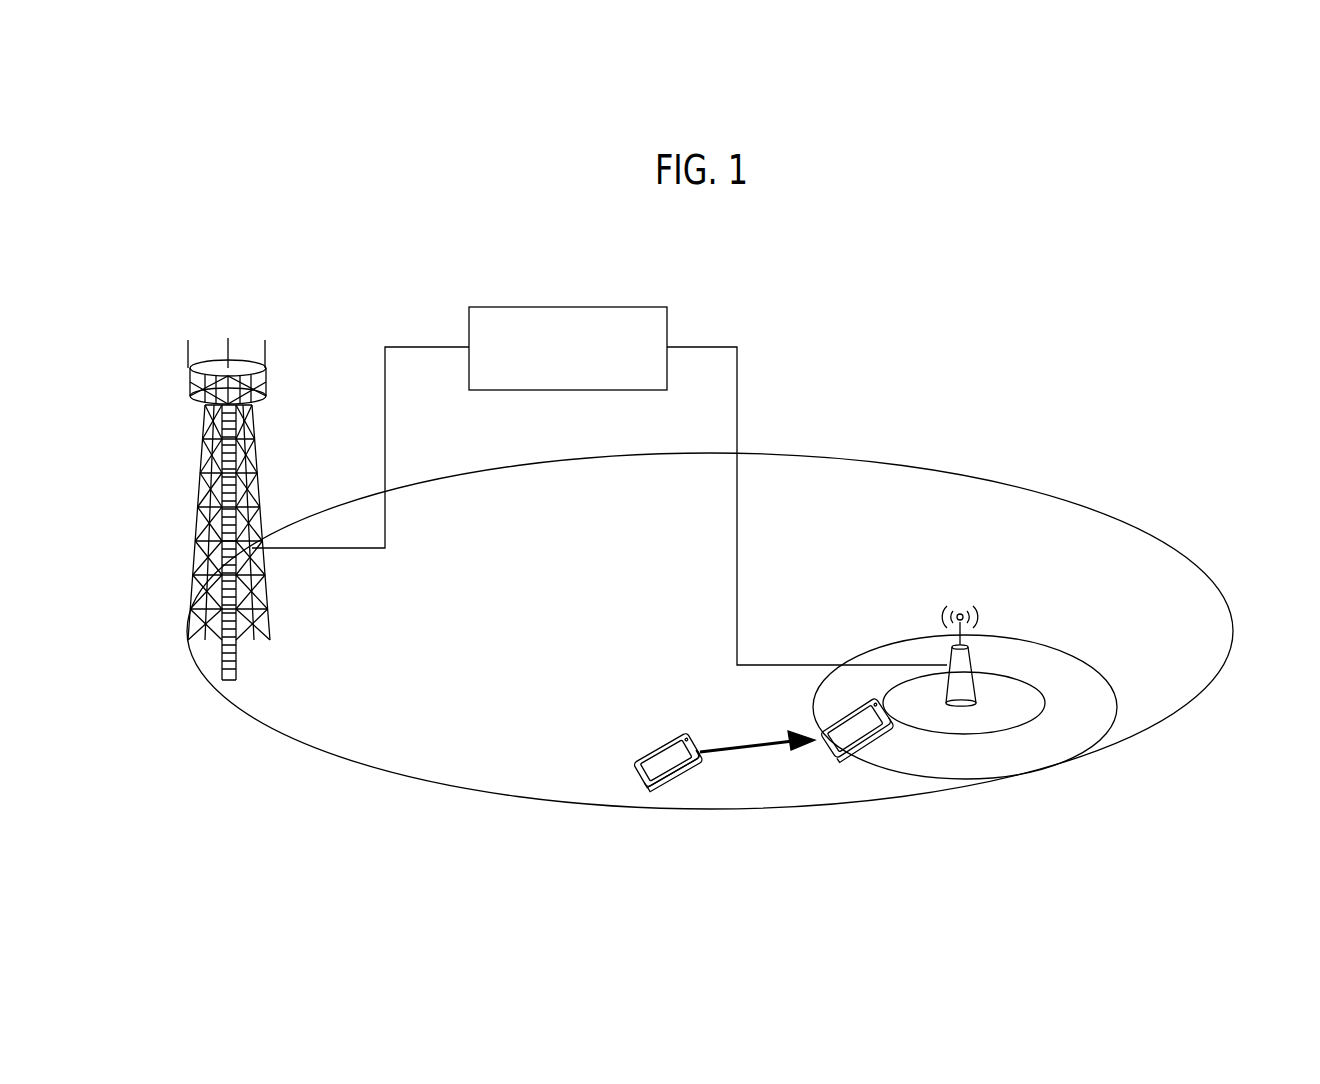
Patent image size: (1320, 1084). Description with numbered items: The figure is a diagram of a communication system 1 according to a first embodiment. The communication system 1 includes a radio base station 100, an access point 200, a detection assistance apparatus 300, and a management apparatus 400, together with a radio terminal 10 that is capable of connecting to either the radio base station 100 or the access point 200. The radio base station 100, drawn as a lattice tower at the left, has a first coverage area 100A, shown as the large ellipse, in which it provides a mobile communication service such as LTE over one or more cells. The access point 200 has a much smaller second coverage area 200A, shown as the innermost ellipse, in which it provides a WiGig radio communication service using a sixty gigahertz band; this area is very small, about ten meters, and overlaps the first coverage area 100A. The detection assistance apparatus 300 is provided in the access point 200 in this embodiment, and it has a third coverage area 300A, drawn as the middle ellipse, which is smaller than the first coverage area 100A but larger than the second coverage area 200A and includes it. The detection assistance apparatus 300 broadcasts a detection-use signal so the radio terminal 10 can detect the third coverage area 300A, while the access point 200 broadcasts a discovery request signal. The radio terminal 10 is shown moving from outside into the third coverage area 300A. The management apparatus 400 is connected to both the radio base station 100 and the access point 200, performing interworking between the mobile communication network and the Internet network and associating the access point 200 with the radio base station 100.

The communication system 1 is at (866, 283).
The radio terminal 10 is at (652, 748).
The radio base station 100 is at (252, 445).
The first coverage area 100A is at (1107, 515).
The access point 200 is at (886, 638).
The detection assistance apparatus 300 is at (950, 655).
The second coverage area 200A is at (990, 733).
The third coverage area 300A is at (1045, 637).
The management apparatus 400 is at (600, 307).